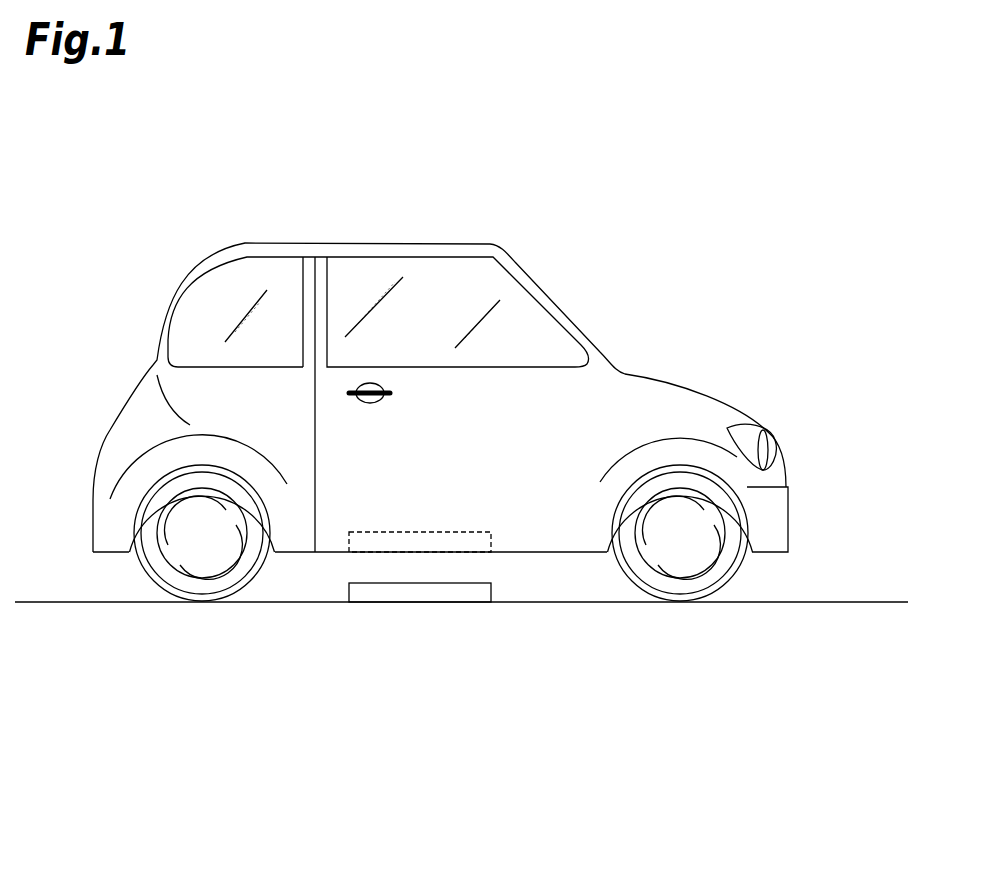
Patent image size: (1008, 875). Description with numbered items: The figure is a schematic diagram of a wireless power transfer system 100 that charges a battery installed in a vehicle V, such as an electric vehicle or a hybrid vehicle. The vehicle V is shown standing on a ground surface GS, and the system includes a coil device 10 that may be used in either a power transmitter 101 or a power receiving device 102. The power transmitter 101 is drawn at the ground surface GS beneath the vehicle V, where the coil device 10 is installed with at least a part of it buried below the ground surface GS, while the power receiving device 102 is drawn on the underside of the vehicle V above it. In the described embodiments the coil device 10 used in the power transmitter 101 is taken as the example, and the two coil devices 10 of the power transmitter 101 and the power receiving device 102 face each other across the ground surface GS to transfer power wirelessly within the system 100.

The vehicle V is at (548, 290).
The coil device 10 is at (457, 573).
The power transmitter 101 is at (491, 587).
The power receiving device 102 is at (477, 532).
The wireless power transfer system 100 is at (461, 645).
The ground surface GS is at (873, 602).